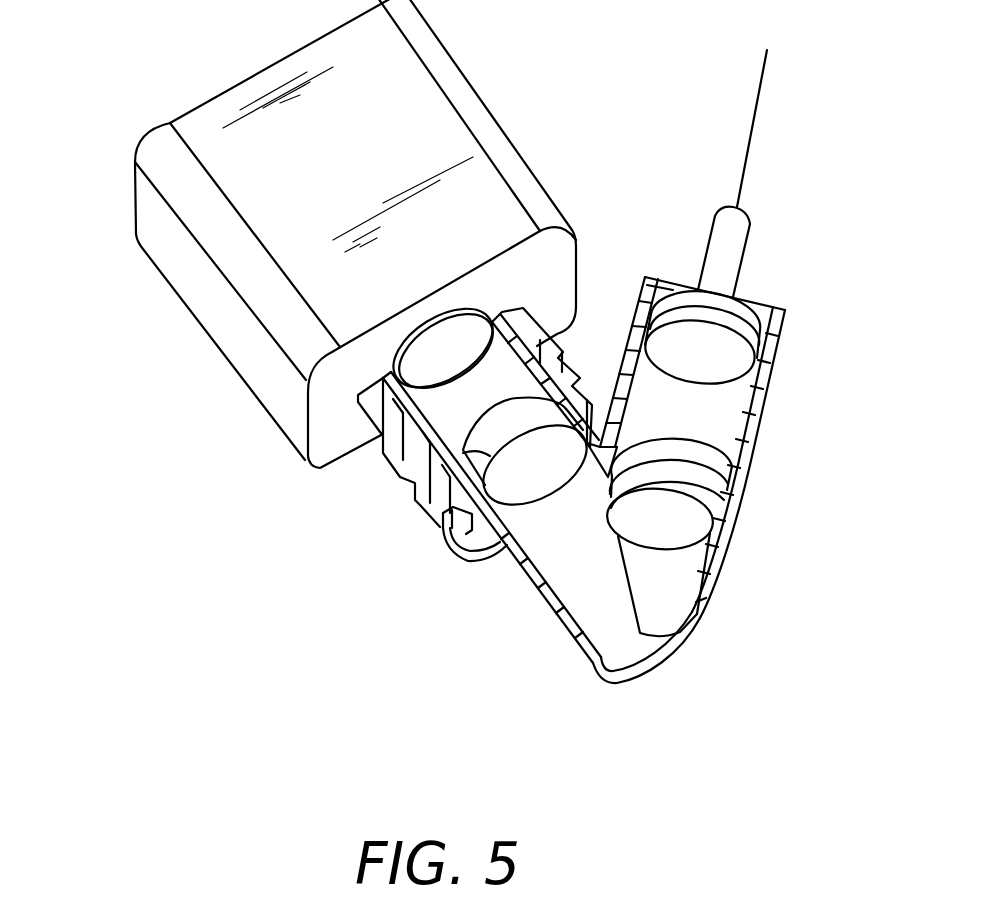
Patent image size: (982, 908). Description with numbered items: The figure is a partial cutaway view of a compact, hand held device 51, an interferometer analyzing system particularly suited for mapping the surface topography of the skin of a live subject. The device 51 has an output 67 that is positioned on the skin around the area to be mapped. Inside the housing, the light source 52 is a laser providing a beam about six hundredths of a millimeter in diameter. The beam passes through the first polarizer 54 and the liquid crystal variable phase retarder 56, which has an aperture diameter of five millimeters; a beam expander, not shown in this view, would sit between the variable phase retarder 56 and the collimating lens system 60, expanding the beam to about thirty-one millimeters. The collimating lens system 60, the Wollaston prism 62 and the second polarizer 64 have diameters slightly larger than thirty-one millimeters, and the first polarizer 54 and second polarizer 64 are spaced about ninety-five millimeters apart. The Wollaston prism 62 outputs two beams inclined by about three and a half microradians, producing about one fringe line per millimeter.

The hand held device 51 is at (92, 454).
The light source 52 is at (745, 253).
The first polarizer 54 is at (463, 452).
The liquid crystal variable phase retarder 56 is at (478, 94).
The collimating lens system 60 is at (707, 467).
The Wollaston prism 62 is at (712, 516).
The second polarizer 64 is at (727, 538).
The output 67 is at (618, 683).